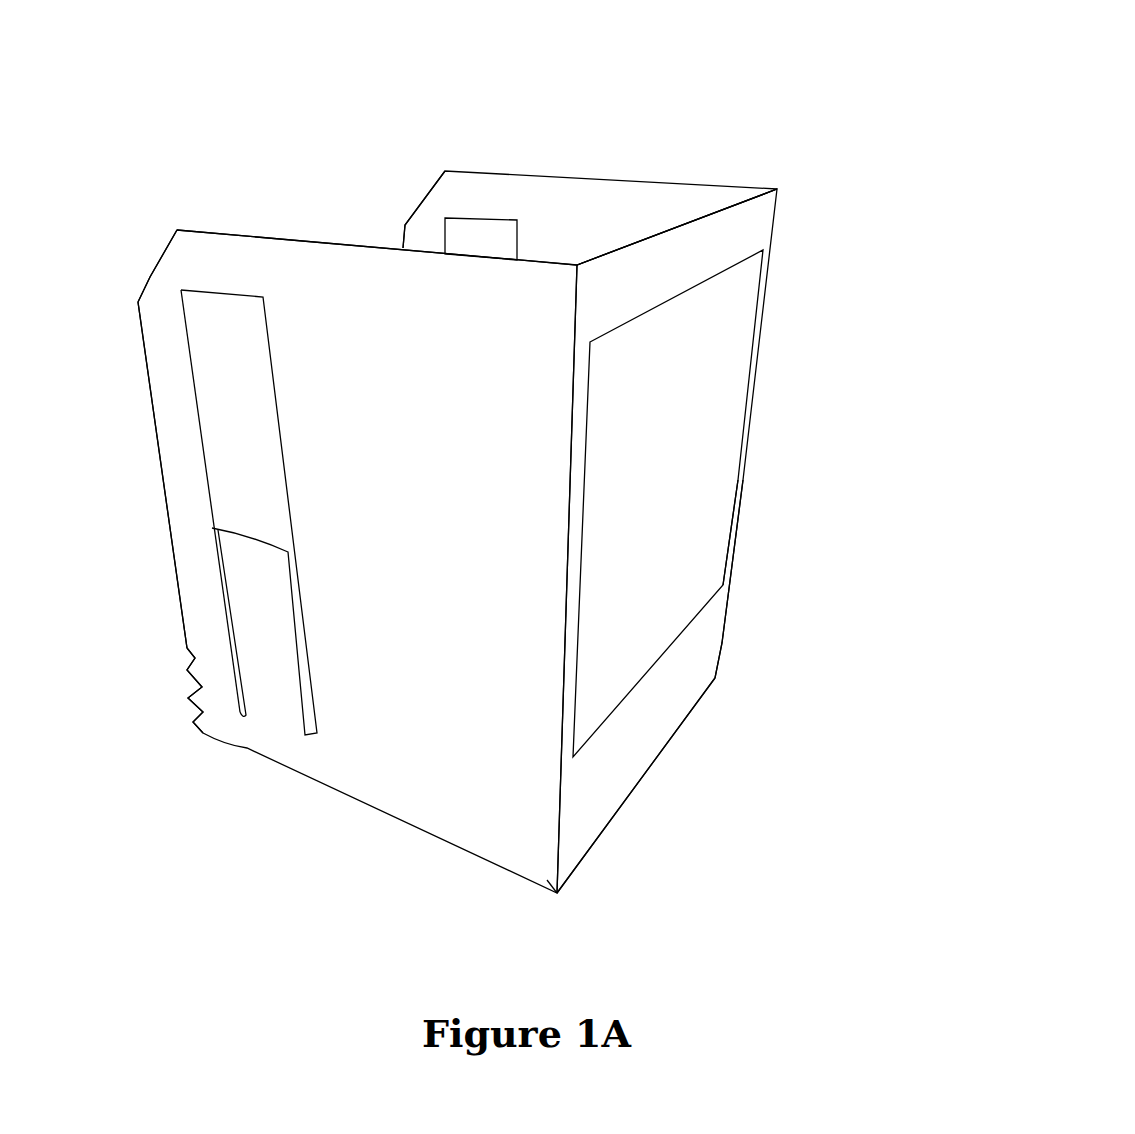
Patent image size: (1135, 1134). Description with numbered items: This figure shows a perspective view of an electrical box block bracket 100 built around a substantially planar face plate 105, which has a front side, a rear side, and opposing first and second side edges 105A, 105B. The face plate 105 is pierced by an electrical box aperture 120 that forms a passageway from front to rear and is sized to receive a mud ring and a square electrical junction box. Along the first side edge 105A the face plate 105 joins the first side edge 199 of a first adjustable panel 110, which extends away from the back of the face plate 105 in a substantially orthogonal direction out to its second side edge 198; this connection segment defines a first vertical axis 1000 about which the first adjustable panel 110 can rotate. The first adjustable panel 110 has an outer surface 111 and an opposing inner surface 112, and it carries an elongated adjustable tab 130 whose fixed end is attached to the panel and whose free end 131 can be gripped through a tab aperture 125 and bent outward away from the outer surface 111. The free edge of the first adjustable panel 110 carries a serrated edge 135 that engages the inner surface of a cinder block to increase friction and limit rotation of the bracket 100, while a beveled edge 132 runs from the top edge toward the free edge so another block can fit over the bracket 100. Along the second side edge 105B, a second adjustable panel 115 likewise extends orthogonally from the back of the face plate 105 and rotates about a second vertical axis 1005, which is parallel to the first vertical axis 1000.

The electrical box block bracket 100 is at (728, 45).
The first adjustable panel 110 is at (357, 561).
The outer surface 111 is at (590, 160).
The inner surface 112 is at (543, 225).
The second adjustable panel 115 is at (477, 218).
The electrical box aperture 120 is at (657, 455).
The tab aperture 125 is at (483, 235).
The adjustable tab 130 is at (248, 588).
The free end 131 is at (220, 528).
The beveled edge 132 is at (400, 222).
The serrated edge 135 is at (178, 695).
The second side edge 198 is at (155, 432).
The first side edge 199 is at (566, 505).
The face plate 105 is at (625, 760).
The first side edge 105A is at (560, 807).
The second side edge 105B is at (722, 643).
The first vertical axis 1000 is at (557, 893).
The second vertical axis 1005 is at (715, 687).